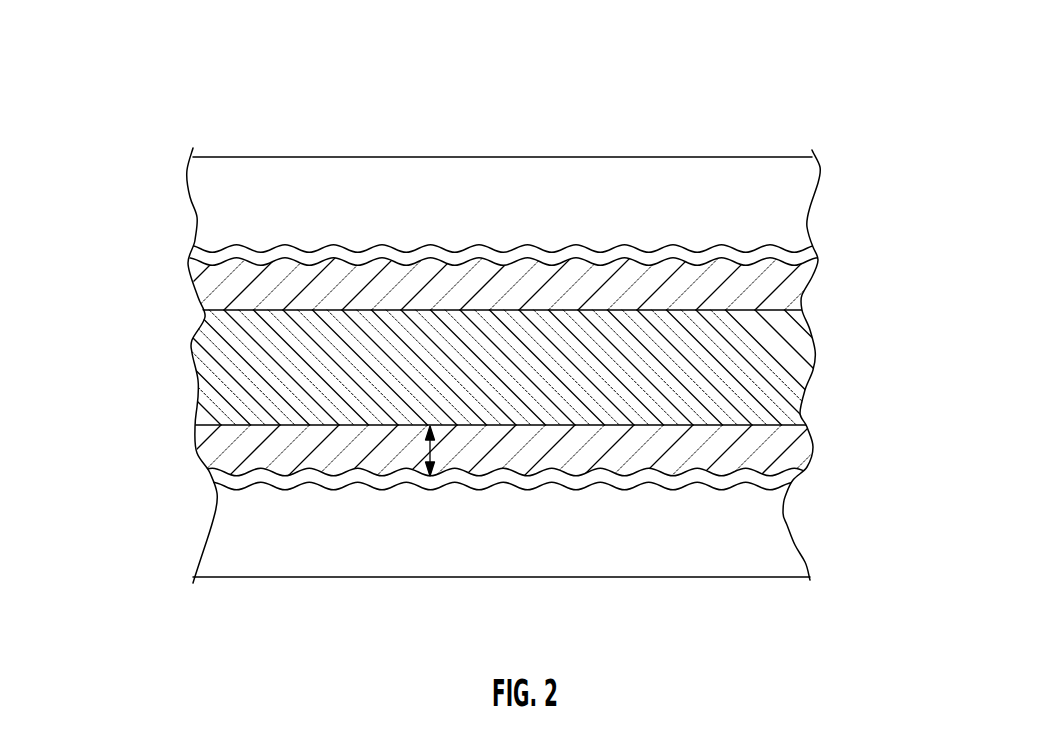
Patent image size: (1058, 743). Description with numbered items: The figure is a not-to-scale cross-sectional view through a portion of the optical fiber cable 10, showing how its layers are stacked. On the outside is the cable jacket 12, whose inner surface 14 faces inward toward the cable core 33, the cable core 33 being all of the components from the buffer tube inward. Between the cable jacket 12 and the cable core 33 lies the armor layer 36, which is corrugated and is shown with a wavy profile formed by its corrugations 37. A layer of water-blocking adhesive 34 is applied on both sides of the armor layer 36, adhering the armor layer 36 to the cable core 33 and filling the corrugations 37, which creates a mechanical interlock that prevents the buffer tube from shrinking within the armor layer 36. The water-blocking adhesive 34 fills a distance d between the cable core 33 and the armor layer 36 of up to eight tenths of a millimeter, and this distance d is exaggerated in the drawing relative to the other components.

The optical fiber cable 10 is at (509, 339).
The cable jacket 12 is at (788, 185).
The inner surface 14 is at (538, 157).
The cable core 33 is at (778, 348).
The water-blocking adhesive 34 is at (233, 282).
The armor layer 36 is at (803, 257).
The corrugations 37 is at (382, 244).
The distance d is at (430, 428).